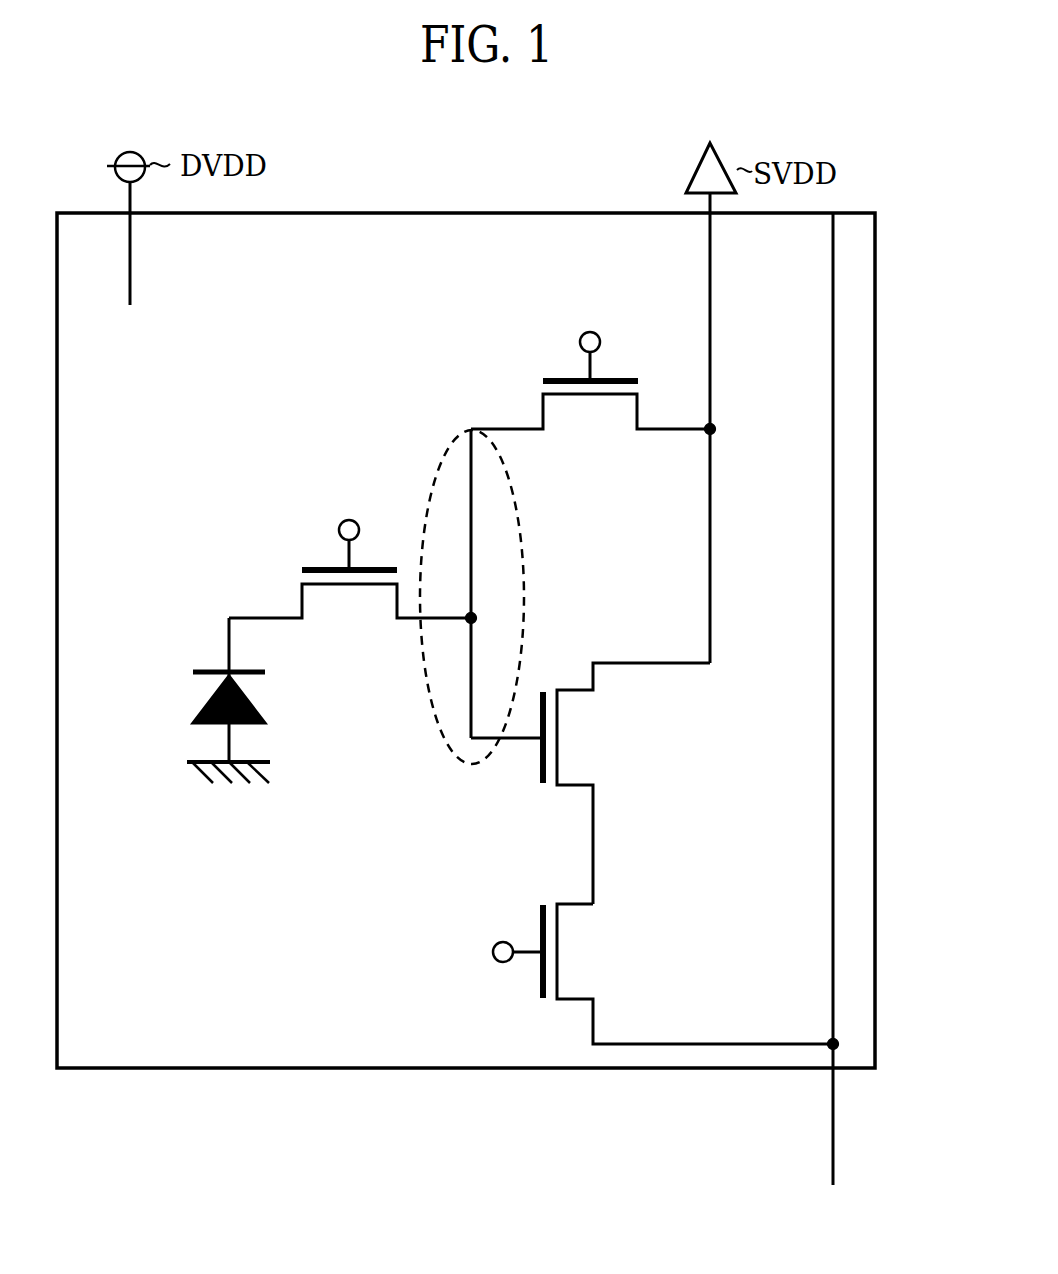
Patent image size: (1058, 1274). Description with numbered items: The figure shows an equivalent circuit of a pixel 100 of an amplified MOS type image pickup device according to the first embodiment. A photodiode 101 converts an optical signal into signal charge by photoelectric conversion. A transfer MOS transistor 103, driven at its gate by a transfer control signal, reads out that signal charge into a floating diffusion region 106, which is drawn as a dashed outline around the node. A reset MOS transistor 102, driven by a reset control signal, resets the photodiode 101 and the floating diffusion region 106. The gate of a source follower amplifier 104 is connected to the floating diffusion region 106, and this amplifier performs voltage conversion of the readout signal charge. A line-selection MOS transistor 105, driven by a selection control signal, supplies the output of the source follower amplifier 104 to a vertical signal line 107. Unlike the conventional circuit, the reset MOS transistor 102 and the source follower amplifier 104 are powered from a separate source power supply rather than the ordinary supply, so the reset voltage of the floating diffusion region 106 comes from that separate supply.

The pixel 100 is at (876, 661).
The photodiode 101 is at (207, 700).
The reset MOS transistor 102 is at (592, 428).
The transfer MOS transistor 103 is at (351, 620).
The source follower amplifier 104 is at (596, 735).
The line-selection MOS transistor 105 is at (596, 953).
The floating diffusion region 106 is at (524, 600).
The vertical signal line 107 is at (830, 846).